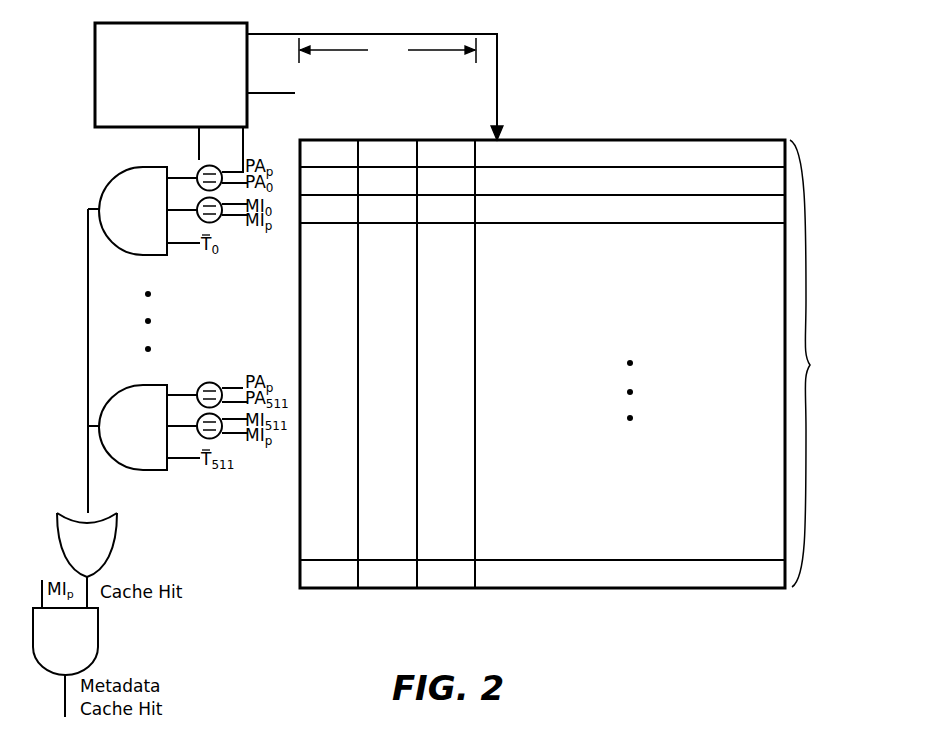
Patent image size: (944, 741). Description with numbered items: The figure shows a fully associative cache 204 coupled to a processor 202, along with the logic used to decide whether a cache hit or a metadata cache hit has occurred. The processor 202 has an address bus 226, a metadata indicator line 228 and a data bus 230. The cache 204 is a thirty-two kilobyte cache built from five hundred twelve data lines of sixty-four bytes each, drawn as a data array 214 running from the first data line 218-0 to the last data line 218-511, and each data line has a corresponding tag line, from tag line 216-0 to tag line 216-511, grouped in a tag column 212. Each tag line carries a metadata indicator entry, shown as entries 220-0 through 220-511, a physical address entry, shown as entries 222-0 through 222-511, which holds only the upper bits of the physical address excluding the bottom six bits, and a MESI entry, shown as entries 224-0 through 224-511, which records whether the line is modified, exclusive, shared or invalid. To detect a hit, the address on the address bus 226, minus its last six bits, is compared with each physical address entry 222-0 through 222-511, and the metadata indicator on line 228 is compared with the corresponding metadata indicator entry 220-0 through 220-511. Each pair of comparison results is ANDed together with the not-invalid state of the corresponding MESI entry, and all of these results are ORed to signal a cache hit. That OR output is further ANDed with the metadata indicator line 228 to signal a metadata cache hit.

The processor 202 is at (171, 75).
The fully associative cache 204 is at (672, 84).
The tag column 212 is at (456, 65).
The data array 214 is at (630, 391).
The tag line 216-0 is at (300, 153).
The tag line 216-511 is at (300, 575).
The data line 218-0 is at (630, 153).
The data line 218-511 is at (563, 573).
The metadata indicator entry 220-0 is at (329, 153).
The metadata indicator entry 220-511 is at (328, 573).
The physical address entry 222-0 is at (387, 153).
The physical address entry 222-511 is at (387, 573).
The MESI entry 224-0 is at (446, 153).
The MESI entry 224-511 is at (446, 573).
The address bus 226 is at (244, 133).
The metadata indicator line 228 is at (197, 140).
The data bus 230 is at (297, 98).